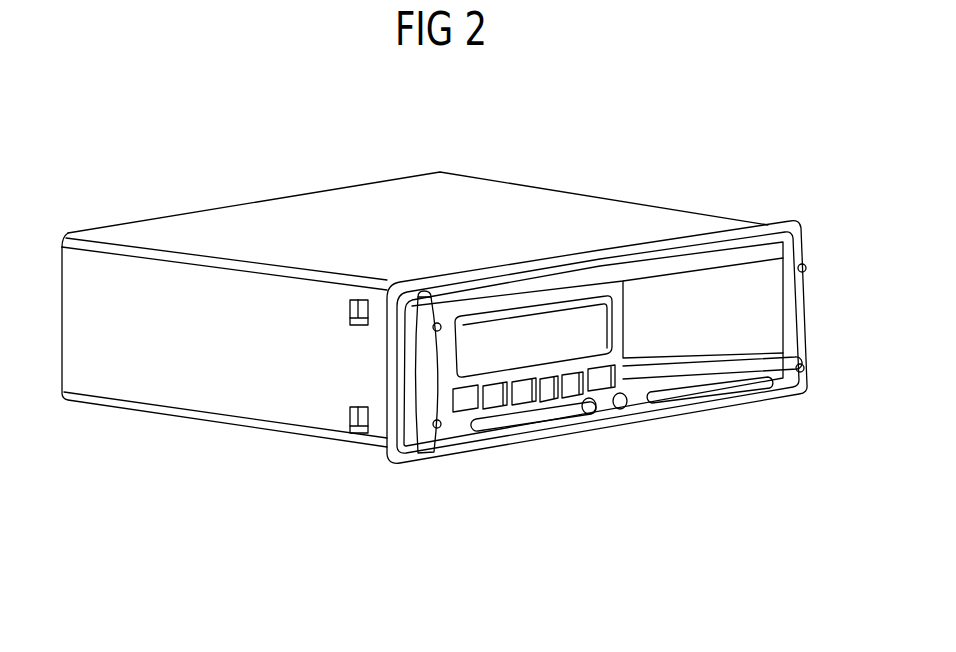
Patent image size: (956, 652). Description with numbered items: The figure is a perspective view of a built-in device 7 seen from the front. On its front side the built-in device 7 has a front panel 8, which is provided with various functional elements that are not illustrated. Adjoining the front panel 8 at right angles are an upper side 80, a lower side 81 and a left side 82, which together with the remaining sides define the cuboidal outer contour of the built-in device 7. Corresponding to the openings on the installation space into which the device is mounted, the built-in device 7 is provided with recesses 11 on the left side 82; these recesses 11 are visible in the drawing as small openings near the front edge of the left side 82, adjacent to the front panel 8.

The built-in device 7 is at (551, 162).
The front panel 8 is at (753, 247).
The upper side 80 is at (260, 230).
The lower side 81 is at (496, 467).
The left side 82 is at (233, 393).
The recesses 11 is at (362, 302).